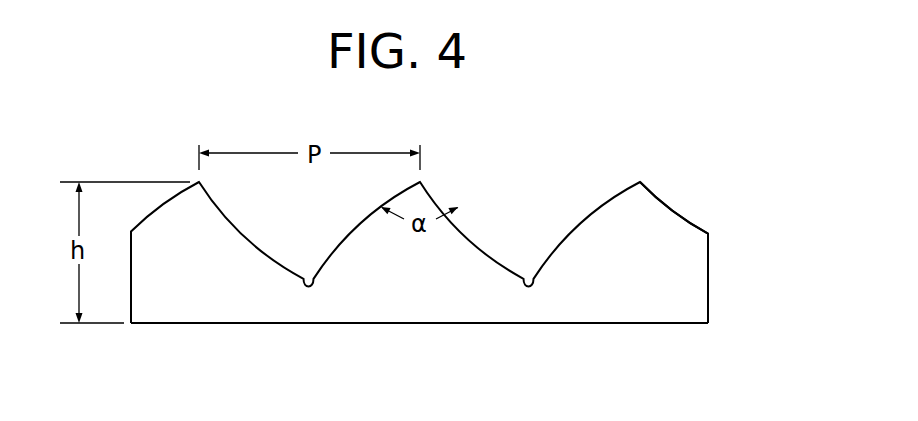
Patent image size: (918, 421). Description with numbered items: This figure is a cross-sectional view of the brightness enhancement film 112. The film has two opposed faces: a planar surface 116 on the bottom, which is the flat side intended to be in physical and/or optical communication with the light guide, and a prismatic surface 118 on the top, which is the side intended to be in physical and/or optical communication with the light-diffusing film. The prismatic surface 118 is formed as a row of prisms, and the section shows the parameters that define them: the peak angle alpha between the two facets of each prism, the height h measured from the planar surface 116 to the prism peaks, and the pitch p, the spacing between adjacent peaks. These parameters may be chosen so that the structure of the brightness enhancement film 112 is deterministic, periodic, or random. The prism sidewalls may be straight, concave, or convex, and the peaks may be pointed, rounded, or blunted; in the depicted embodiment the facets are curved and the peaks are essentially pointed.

The brightness enhancement film 112 is at (723, 191).
The planar surface 116 is at (305, 323).
The prismatic surface 118 is at (670, 197).